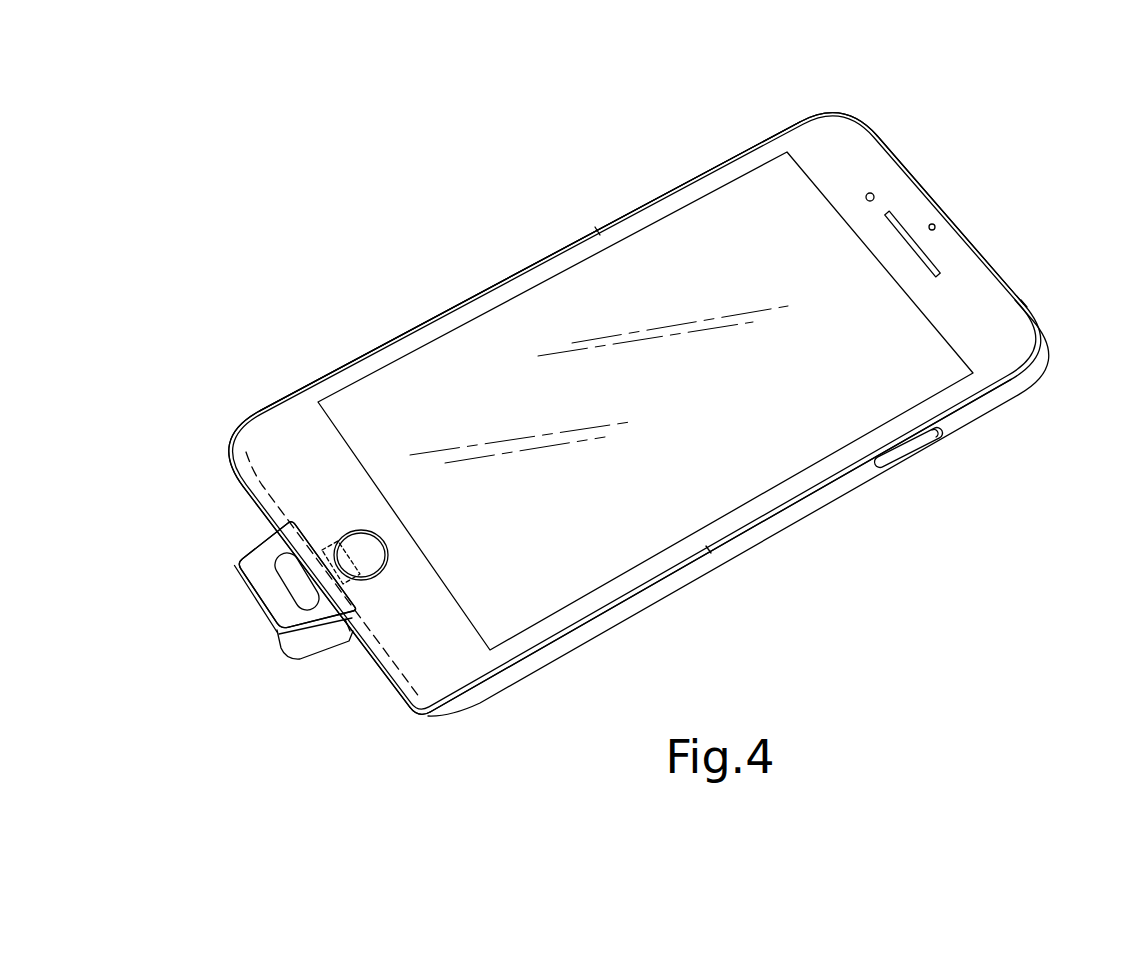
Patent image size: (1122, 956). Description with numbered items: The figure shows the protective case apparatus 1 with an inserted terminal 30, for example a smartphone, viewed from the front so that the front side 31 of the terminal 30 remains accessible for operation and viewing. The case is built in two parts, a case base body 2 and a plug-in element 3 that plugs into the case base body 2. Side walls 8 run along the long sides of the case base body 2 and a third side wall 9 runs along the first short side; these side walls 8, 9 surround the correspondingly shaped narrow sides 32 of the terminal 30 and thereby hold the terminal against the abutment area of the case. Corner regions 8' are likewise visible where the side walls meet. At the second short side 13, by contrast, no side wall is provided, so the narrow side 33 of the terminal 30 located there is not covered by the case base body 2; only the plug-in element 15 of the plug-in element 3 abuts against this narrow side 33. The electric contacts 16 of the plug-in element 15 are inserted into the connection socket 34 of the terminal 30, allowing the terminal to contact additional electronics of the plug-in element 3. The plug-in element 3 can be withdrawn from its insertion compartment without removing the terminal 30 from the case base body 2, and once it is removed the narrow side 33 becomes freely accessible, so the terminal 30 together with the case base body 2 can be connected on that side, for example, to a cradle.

The protective case apparatus 1 is at (1005, 131).
The case base body 2 is at (970, 244).
The plug-in element 3 is at (267, 520).
The side wall 8 is at (635, 417).
The corner region 8' is at (346, 571).
The third side wall 9 is at (942, 210).
The second short side 13 is at (272, 484).
The plug-in element 15 is at (263, 596).
The electric contacts 16 is at (342, 545).
The terminal 30 is at (823, 147).
The front side 31 is at (712, 212).
The narrow sides 32 is at (597, 231).
The narrow side 33 is at (244, 484).
The connection socket 34 is at (357, 587).